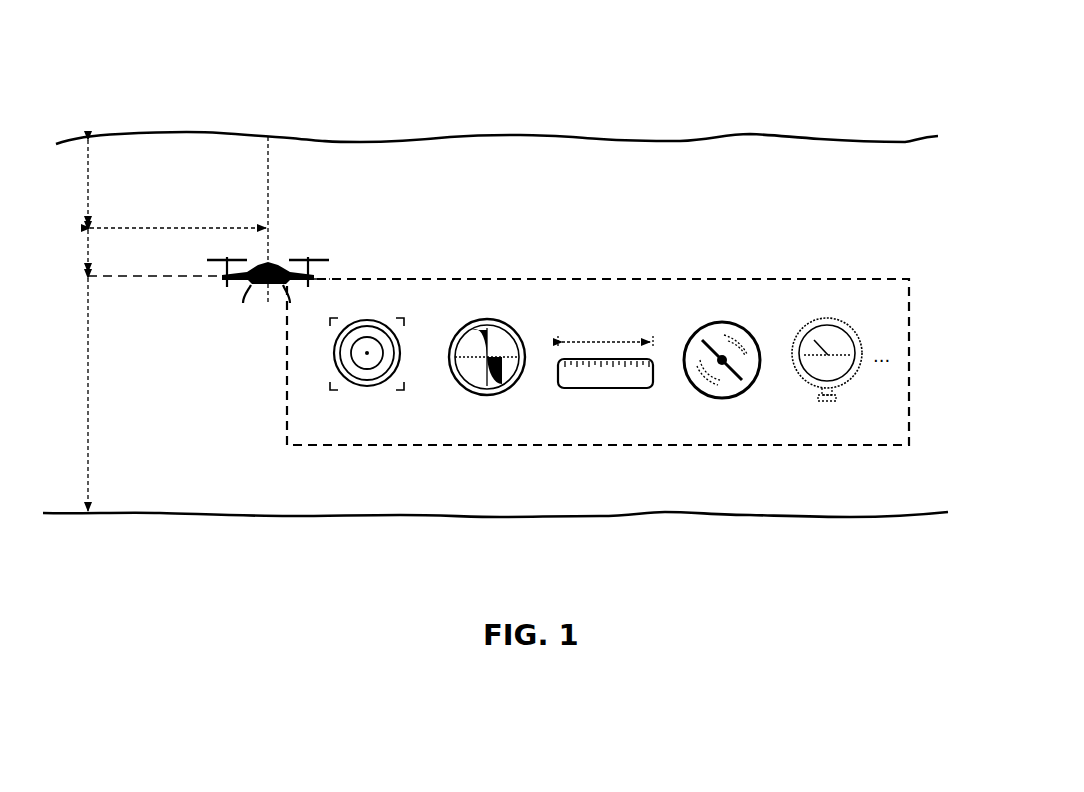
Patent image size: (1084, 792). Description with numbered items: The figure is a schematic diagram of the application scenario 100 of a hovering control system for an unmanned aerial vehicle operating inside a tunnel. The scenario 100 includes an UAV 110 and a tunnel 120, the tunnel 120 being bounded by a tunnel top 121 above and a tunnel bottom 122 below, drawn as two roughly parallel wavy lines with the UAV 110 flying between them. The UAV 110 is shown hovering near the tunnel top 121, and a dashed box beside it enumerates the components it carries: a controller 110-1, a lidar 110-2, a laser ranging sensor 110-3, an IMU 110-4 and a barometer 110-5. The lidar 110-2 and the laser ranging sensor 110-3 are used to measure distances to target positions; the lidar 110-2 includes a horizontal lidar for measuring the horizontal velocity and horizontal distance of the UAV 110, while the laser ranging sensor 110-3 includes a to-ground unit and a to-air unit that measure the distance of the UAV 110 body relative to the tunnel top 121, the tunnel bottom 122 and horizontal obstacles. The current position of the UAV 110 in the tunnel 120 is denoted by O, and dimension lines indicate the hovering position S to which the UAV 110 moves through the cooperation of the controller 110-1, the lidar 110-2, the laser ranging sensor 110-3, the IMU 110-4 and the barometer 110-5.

The application scenario 100 is at (120, 51).
The UAV 110 is at (312, 262).
The controller 110-1 is at (400, 432).
The lidar 110-2 is at (518, 432).
The laser ranging sensor 110-3 is at (636, 429).
The IMU 110-4 is at (754, 432).
The barometer 110-5 is at (860, 427).
The tunnel 120 is at (934, 248).
The tunnel top 121 is at (912, 145).
The tunnel bottom 122 is at (945, 512).
The hovering position S is at (85, 226).
The current position O is at (262, 288).